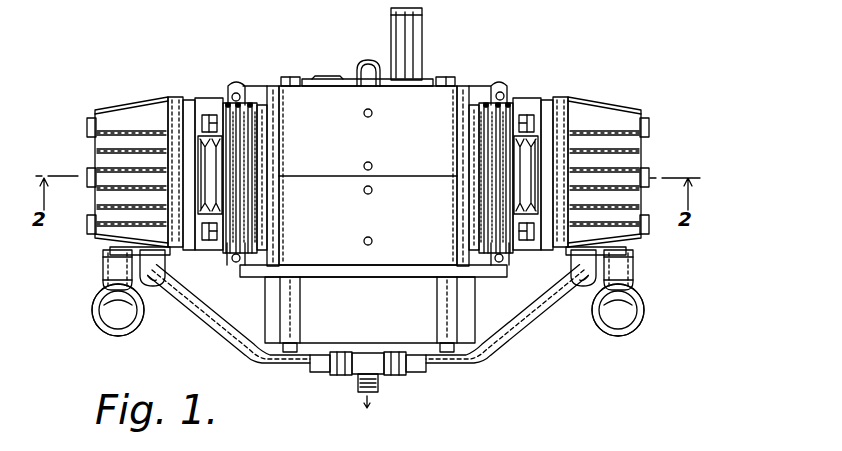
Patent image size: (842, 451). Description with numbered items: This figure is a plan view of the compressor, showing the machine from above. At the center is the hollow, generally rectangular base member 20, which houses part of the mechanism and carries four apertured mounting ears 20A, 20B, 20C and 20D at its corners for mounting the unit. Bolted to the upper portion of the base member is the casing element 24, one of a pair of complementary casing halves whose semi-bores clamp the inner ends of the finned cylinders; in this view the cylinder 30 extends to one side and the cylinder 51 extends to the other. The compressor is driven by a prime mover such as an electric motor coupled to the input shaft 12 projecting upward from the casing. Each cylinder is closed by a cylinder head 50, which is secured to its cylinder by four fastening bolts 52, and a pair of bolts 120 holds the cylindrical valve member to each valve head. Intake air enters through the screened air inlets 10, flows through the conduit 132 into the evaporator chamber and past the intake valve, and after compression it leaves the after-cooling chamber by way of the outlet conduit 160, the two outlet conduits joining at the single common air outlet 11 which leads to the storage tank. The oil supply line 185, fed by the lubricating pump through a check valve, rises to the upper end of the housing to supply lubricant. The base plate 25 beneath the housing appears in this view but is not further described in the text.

The screened air inlet 10 is at (113, 318).
The common air outlet 11 is at (380, 392).
The compressor input shaft 12 is at (418, 43).
The base member 20 is at (261, 92).
The apertured mounting ear 20A is at (233, 93).
The apertured mounting ear 20B is at (504, 92).
The apertured mounting ear 20C is at (233, 262).
The apertured mounting ear 20D is at (504, 262).
The casing element 24 is at (323, 95).
The base plate 25 is at (345, 257).
The cylinder 30 is at (490, 188).
The cylinder head 50 is at (99, 156).
The bellows 51 is at (258, 190).
The fastening bolt 52 is at (90, 229).
The bolt 120 is at (92, 183).
The conduit 132 is at (112, 307).
The outlet conduit 160 is at (213, 342).
The oil supply line 185 is at (367, 62).